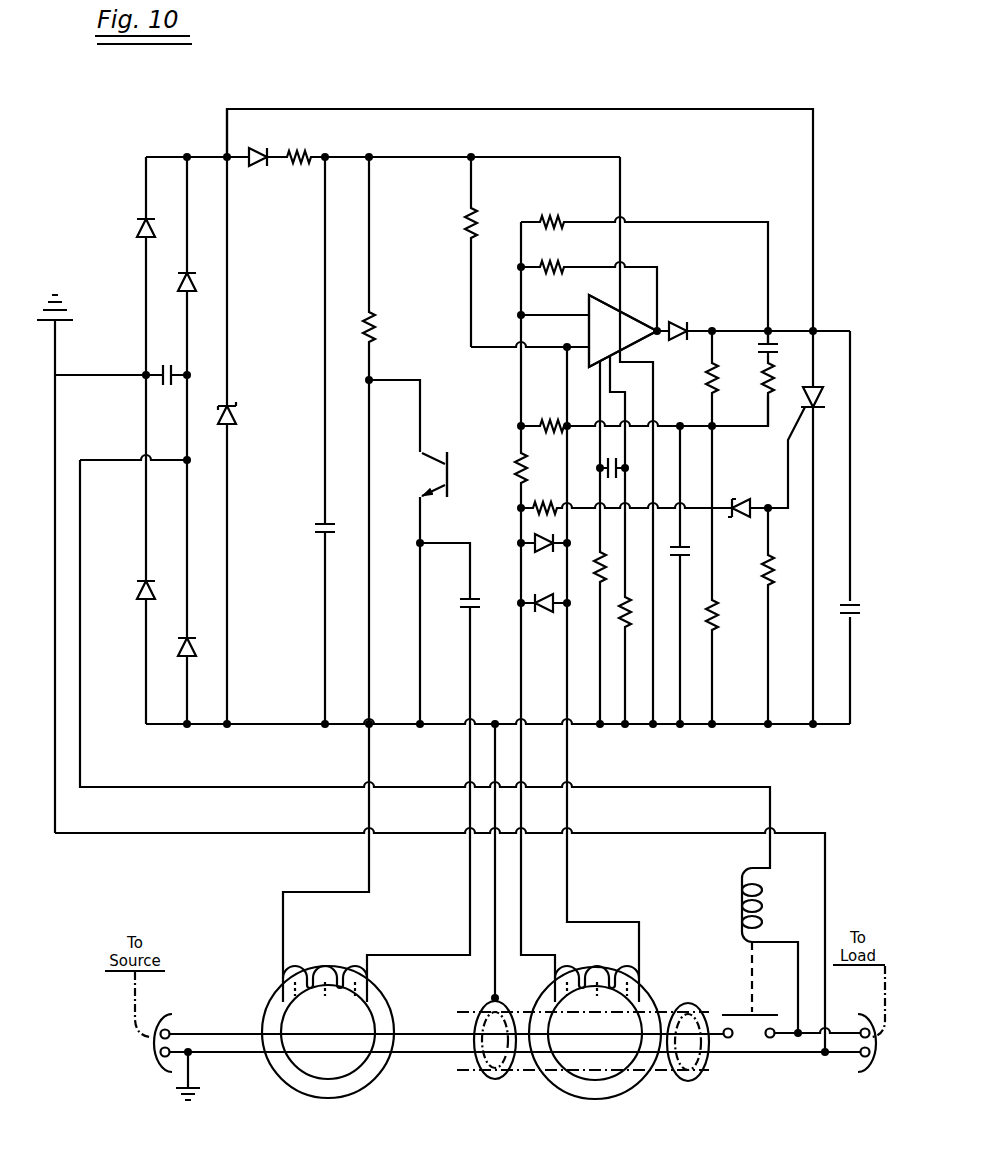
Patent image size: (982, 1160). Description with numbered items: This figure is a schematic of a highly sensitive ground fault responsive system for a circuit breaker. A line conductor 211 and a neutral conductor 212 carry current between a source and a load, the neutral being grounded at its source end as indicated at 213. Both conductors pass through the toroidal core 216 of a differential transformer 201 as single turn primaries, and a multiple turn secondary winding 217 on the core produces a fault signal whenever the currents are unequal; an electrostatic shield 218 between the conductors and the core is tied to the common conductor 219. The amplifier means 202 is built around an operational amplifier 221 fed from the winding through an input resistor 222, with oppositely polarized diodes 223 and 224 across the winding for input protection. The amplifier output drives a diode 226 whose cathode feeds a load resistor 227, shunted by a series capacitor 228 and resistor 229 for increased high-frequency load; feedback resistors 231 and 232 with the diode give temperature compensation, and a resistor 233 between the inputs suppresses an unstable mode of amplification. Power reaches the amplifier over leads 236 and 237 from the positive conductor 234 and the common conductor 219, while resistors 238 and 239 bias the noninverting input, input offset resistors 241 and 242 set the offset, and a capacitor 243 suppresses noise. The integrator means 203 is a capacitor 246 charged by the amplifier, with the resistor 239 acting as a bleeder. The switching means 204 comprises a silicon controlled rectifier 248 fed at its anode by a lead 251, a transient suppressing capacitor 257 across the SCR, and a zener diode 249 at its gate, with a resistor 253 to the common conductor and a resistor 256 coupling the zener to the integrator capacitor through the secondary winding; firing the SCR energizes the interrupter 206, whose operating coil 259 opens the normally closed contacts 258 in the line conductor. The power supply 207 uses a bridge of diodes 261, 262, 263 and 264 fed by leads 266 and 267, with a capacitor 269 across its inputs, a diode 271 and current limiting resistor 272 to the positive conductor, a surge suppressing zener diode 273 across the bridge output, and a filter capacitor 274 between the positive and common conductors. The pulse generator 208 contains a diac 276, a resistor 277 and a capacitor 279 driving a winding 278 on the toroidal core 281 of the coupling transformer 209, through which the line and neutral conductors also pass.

The differential transformer 201 is at (638, 986).
The amplifier means 202 is at (650, 246).
The integrator means 203 is at (694, 528).
The switching means 204 is at (822, 393).
The interrupter 206 is at (800, 856).
The power supply 207 is at (138, 222).
The pulse generator 208 is at (416, 376).
The coupling transformer 209 is at (272, 978).
The line conductor 211 is at (236, 1012).
The neutral conductor 212 is at (232, 1056).
The ground connection 213 is at (180, 1072).
The toroidal core 216 is at (572, 1082).
The secondary winding 217 is at (607, 960).
The electrostatic shield 218 is at (481, 1078).
The common conductor 219 is at (281, 720).
The operational amplifier 221 is at (632, 330).
The input resistor 222 is at (513, 482).
The diode 223 is at (542, 614).
The diode 224 is at (535, 548).
The diode 226 is at (690, 320).
The load resistor 227 is at (707, 374).
The capacitor 228 is at (770, 349).
The resistor 229 is at (775, 390).
The feedback resistor 231 is at (560, 265).
The feedback resistor 232 is at (553, 200).
The resistor 233 is at (553, 410).
The positive conductor 234 is at (445, 157).
The lead 236 is at (622, 168).
The lead 237 is at (647, 401).
The resistor 238 is at (468, 228).
The resistor 239 is at (720, 628).
The input offset resistor 241 is at (597, 585).
The input offset resistor 242 is at (622, 630).
The capacitor 243 is at (606, 467).
The capacitor 246 is at (692, 552).
The silicon controlled rectifier 248 is at (834, 406).
The zener diode 249 is at (764, 500).
The lead 251 is at (522, 109).
The resistor 253 is at (772, 585).
The resistor 256 is at (556, 500).
The capacitor 257 is at (867, 602).
The contacts 258 is at (768, 1008).
The operating coil 259 is at (762, 912).
The diode 261 is at (141, 236).
The diode 262 is at (140, 600).
The diode 263 is at (206, 266).
The diode 264 is at (206, 630).
The lead 266 is at (117, 370).
The lead 267 is at (125, 457).
The capacitor 269 is at (168, 370).
The diode 271 is at (258, 149).
The current limiting resistor 272 is at (293, 170).
The zener diode 273 is at (234, 418).
The capacitor 274 is at (320, 540).
The bilateral switching device 276 is at (432, 484).
The resistor 277 is at (366, 323).
The winding 278 is at (328, 963).
The capacitor 279 is at (466, 612).
The toroidal core 281 is at (386, 1012).